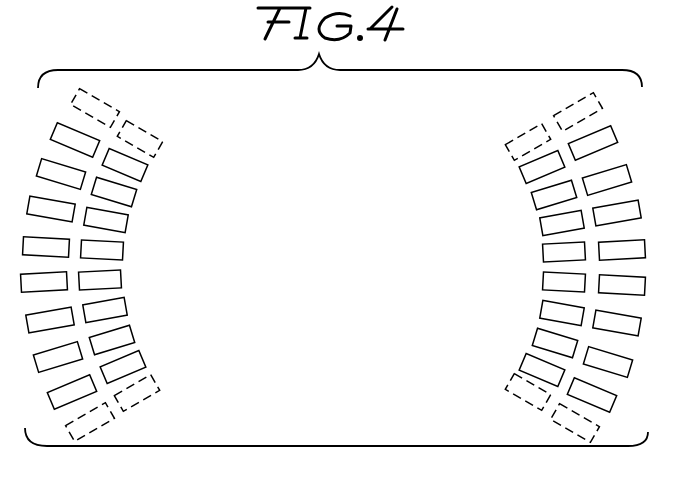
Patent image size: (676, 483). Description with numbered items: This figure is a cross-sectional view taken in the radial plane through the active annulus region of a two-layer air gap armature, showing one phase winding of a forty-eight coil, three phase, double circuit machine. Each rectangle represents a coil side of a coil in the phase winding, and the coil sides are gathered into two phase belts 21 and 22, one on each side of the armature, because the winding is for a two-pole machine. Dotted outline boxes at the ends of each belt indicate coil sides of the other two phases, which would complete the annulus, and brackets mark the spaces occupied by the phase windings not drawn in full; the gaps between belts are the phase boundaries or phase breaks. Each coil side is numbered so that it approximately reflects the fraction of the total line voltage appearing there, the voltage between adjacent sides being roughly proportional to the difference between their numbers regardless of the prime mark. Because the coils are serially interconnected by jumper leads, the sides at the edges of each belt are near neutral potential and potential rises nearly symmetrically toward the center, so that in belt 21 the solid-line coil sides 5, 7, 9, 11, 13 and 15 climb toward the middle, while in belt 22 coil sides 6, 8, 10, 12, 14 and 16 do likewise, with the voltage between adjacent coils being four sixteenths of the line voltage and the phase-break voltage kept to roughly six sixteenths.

The phase belt 21 is at (95, 265).
The phase belt 22 is at (571, 268).
The coil side 5 is at (111, 339).
The coil side 6 is at (606, 180).
The coil side 7 is at (113, 191).
The coil side 8 is at (607, 362).
The coil side 9 is at (105, 309).
The coil side 10 is at (617, 213).
The coil side 11 is at (106, 219).
The coil side 12 is at (617, 323).
The coil side 13 is at (100, 280).
The coil side 14 is at (622, 250).
The coil side 15 is at (102, 250).
The coil side 16 is at (622, 285).